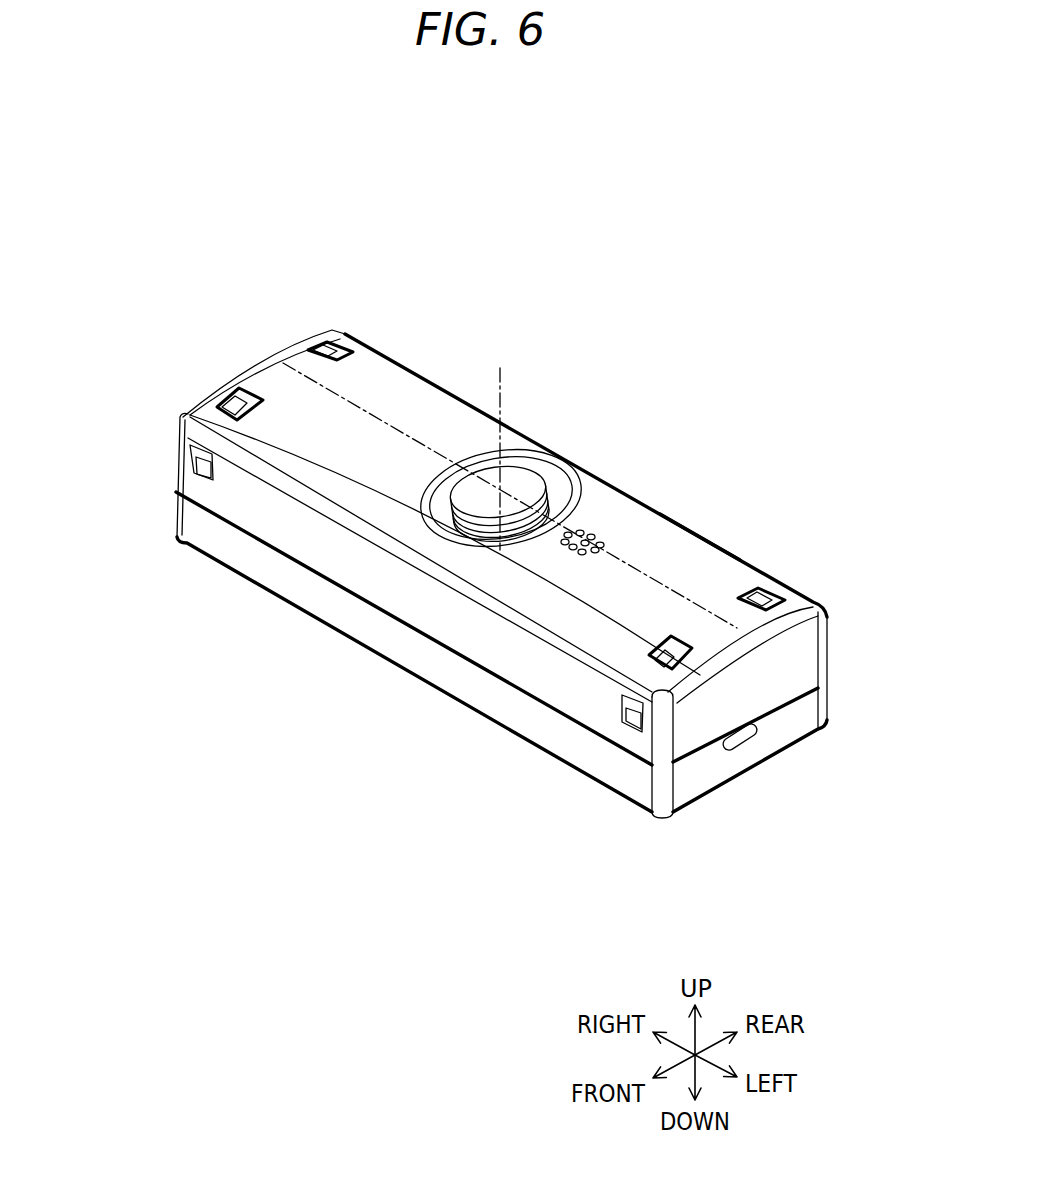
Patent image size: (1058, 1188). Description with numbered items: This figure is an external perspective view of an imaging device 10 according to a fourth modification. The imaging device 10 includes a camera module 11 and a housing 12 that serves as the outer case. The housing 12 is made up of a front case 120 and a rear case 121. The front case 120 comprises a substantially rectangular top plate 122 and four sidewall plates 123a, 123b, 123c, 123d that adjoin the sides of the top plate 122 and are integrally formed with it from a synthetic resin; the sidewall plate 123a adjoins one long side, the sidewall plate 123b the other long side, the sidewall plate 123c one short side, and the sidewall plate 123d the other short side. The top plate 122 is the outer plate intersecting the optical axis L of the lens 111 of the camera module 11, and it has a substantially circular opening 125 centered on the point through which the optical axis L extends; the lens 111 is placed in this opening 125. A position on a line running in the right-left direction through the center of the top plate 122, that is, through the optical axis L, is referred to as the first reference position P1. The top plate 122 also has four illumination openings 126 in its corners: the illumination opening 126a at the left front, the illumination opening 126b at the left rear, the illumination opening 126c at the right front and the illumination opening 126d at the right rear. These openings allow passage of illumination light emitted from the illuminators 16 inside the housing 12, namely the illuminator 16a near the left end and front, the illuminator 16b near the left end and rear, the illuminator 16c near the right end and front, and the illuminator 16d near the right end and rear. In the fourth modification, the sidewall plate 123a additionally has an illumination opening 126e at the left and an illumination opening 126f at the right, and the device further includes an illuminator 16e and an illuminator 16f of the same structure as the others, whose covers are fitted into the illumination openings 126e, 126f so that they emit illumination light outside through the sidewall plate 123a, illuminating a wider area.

The imaging device 10 is at (228, 206).
The housing 12 is at (336, 800).
The front case 120 is at (278, 380).
The rear case 121 is at (268, 593).
The top plate 122 is at (428, 403).
The sidewall plate 123a is at (378, 595).
The sidewall plate 123b is at (697, 533).
The sidewall plate 123c is at (207, 393).
The sidewall plate 123d is at (798, 668).
The opening 125 is at (563, 487).
The illumination openings 126 is at (476, 492).
The illumination opening 126a is at (675, 662).
The illumination opening 126b is at (760, 593).
The illumination opening 126c is at (232, 408).
The illumination opening 126d is at (318, 347).
The illumination opening 126e is at (633, 723).
The illumination opening 126f is at (207, 447).
The illuminators 16 is at (457, 542).
The illuminator 16a is at (667, 657).
The illuminator 16b is at (750, 597).
The illuminator 16c is at (238, 406).
The illuminator 16d is at (337, 348).
The illuminator 16e is at (637, 723).
The illuminator 16f is at (207, 475).
The camera module 11 is at (551, 451).
The lens 111 is at (512, 473).
The optical axis L is at (507, 373).
The first reference position P1 is at (622, 562).